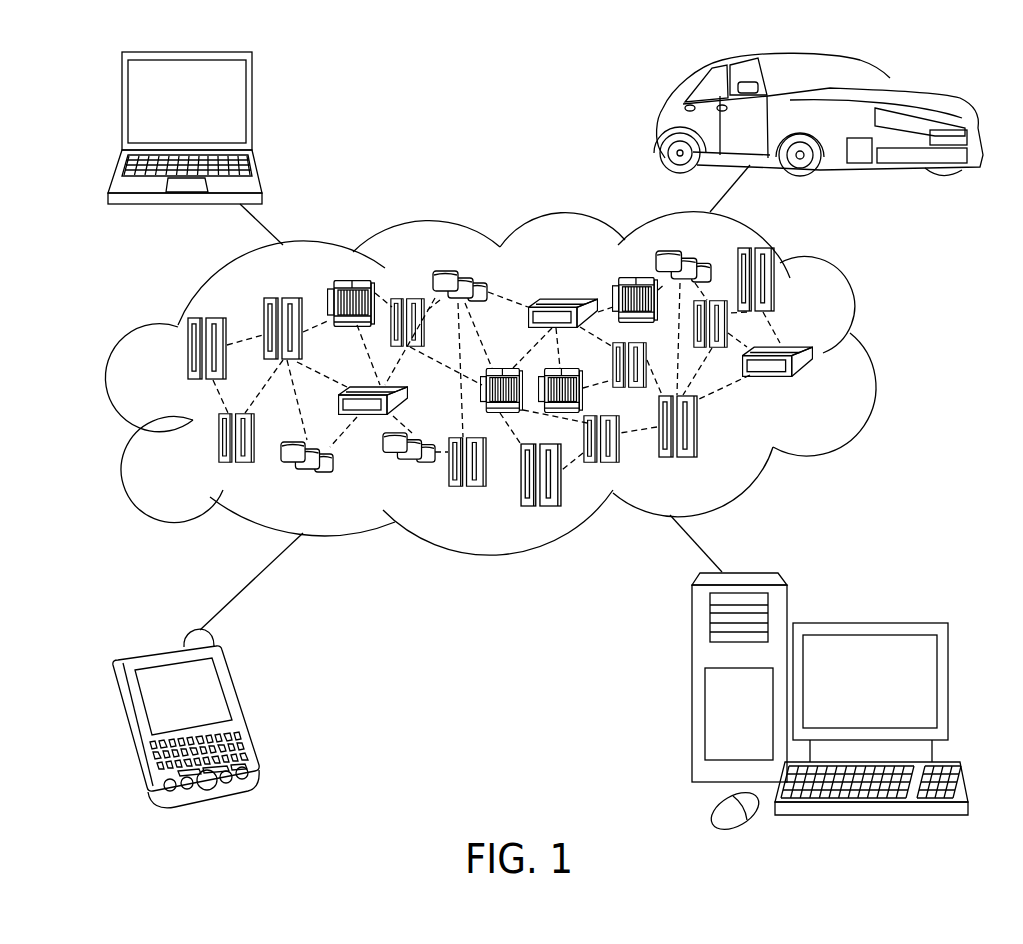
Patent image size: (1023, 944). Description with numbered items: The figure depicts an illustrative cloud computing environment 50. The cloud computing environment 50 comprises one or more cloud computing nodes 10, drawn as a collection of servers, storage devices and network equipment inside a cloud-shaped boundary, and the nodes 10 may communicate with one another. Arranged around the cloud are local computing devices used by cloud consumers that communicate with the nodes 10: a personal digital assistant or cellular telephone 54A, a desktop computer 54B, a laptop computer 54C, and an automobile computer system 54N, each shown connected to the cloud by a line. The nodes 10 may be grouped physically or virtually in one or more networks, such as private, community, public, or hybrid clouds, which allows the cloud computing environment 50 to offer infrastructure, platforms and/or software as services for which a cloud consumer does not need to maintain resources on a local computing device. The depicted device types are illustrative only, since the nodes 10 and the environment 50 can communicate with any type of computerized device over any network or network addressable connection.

The personal digital assistant or cellular telephone 54A is at (240, 708).
The desktop computer 54B is at (867, 623).
The laptop computer 54C is at (252, 107).
The automobile computer system 54N is at (663, 125).
The cloud computing environment 50 is at (513, 383).
The cloud computing node 10 is at (816, 388).